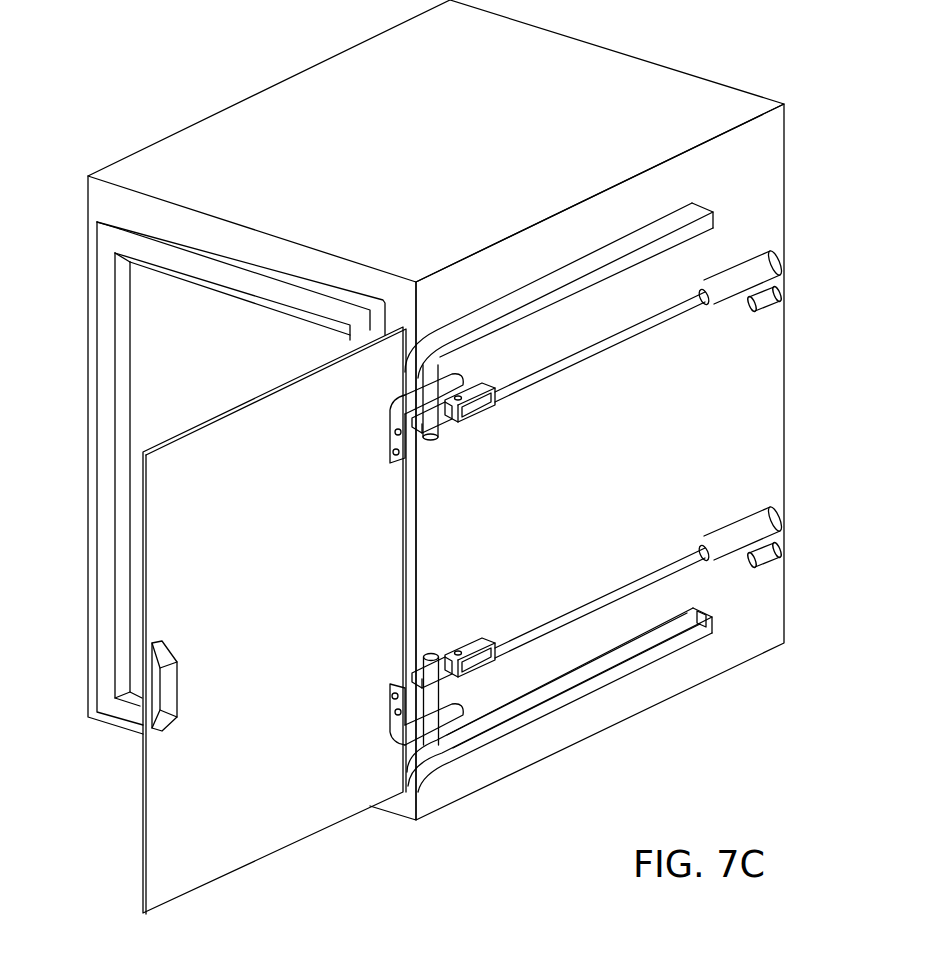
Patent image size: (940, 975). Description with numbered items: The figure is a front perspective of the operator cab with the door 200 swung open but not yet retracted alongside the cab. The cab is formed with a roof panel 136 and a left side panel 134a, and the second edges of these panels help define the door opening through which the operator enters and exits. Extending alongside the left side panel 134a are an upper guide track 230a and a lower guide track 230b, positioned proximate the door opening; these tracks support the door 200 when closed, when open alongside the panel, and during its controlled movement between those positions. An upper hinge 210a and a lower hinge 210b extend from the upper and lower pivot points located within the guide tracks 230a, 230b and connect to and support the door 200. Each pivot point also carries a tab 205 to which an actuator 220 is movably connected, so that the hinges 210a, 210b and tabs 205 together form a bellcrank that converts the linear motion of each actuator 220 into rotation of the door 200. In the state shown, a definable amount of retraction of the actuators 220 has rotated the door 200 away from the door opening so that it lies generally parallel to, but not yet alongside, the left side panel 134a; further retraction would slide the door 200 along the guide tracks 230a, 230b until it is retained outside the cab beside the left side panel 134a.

The roof panel 136 is at (280, 140).
The left side panel 134a is at (751, 166).
The upper guide track 230a is at (623, 263).
The lower guide track 230b is at (638, 662).
The actuator 220 is at (727, 283).
The tab 205 is at (447, 415).
The upper hinge 210a is at (400, 416).
The lower hinge 210b is at (395, 737).
The door 200 is at (238, 780).